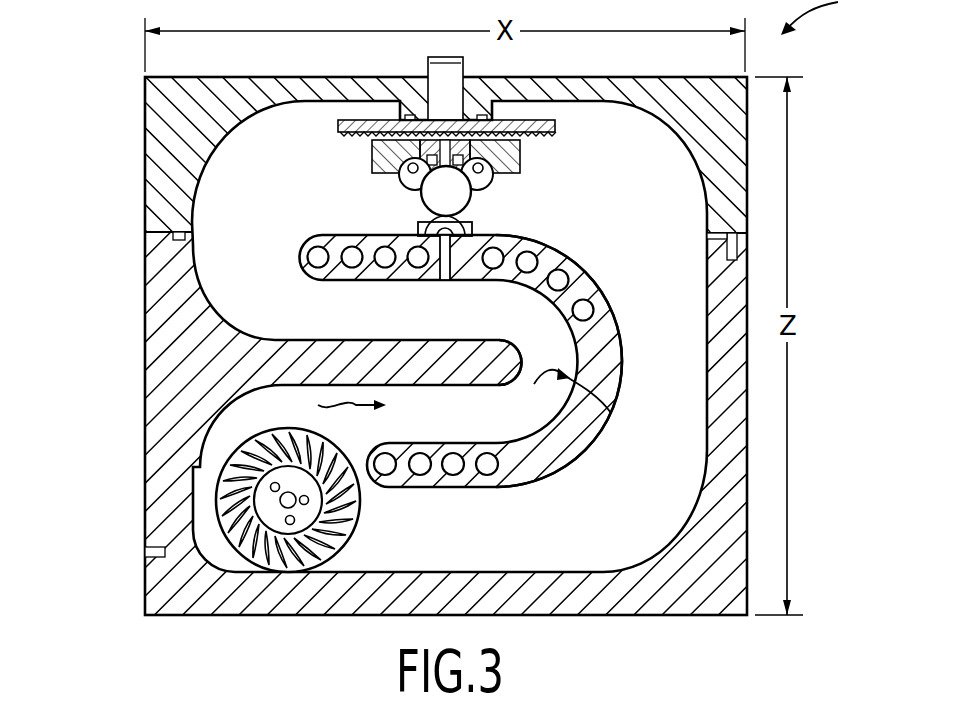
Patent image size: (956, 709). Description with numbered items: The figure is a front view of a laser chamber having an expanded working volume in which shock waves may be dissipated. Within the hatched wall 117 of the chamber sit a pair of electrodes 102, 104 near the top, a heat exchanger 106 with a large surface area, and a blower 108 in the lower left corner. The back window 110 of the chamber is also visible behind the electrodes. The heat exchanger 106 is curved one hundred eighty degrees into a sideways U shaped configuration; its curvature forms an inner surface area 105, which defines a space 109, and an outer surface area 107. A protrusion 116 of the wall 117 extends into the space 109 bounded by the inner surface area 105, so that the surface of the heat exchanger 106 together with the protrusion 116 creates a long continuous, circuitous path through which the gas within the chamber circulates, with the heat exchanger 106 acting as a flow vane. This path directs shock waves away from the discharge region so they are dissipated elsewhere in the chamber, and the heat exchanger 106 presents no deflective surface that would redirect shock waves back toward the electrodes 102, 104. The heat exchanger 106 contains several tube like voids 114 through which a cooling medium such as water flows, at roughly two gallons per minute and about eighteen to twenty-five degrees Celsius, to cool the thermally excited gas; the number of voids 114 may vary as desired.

The electrode 102 is at (472, 203).
The electrode 104 is at (476, 229).
The inner surface area 105 is at (611, 413).
The heat exchanger 106 is at (623, 372).
The outer surface area 107 is at (608, 262).
The blower 108 is at (357, 530).
The space 109 is at (328, 406).
The back window 110 is at (422, 190).
The tube like voids 114 is at (418, 267).
The protrusion 116 is at (504, 386).
The wall 117 is at (145, 325).